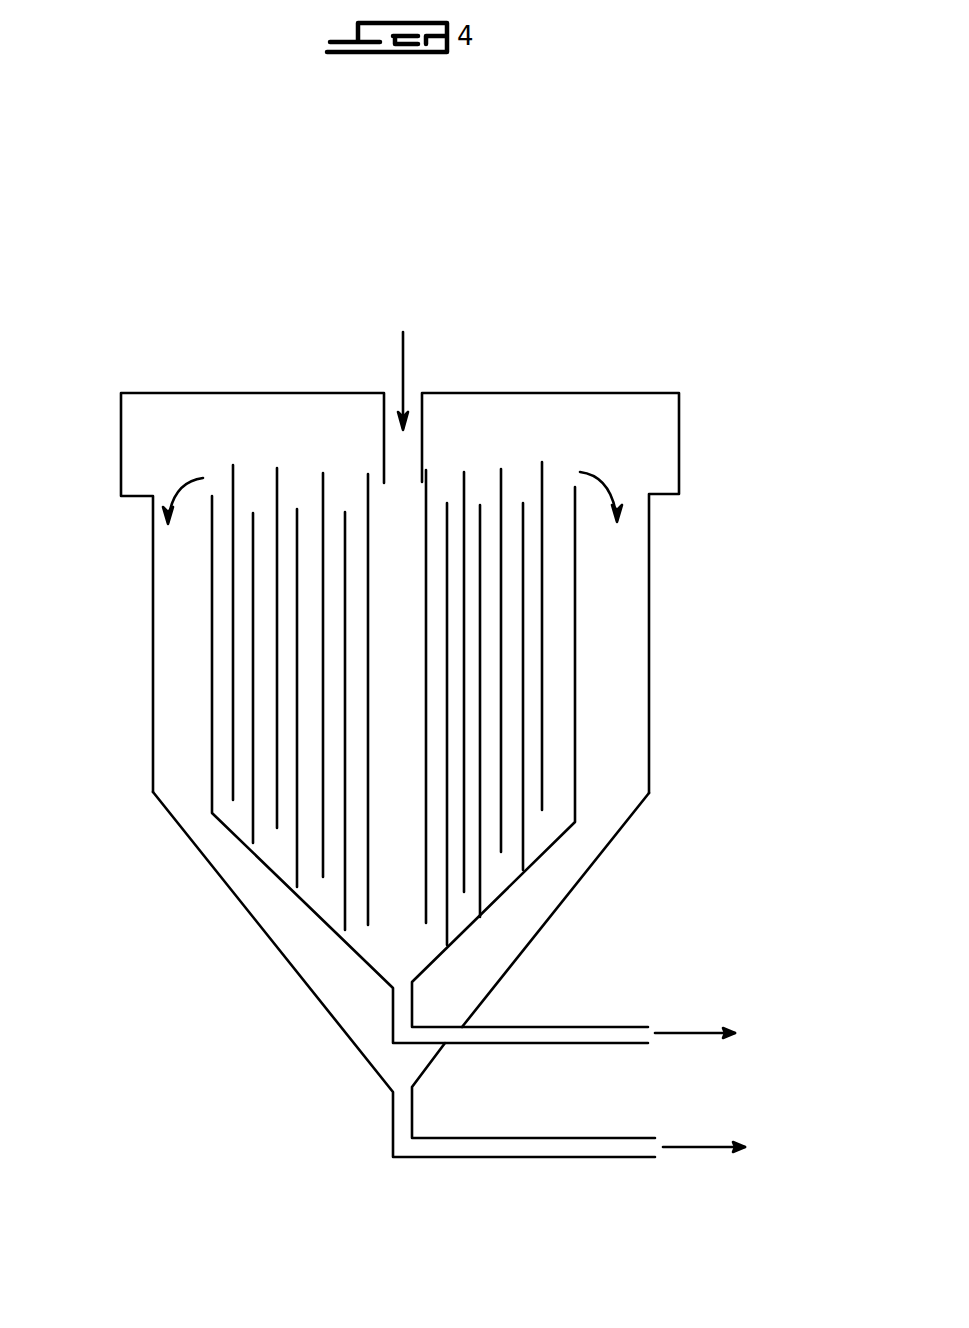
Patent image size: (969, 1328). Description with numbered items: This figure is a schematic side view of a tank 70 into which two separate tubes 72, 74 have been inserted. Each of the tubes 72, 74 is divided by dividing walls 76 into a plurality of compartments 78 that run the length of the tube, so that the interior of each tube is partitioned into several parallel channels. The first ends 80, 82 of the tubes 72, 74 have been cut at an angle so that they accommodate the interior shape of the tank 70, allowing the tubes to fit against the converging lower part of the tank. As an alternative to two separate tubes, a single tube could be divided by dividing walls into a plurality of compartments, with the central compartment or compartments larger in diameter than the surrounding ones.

The tank 70 is at (688, 384).
The tube 72 is at (526, 465).
The tube 74 is at (268, 420).
The dividing walls 76 is at (273, 725).
The compartments 78 is at (310, 657).
The first end 80 is at (497, 882).
The first end 82 is at (317, 903).